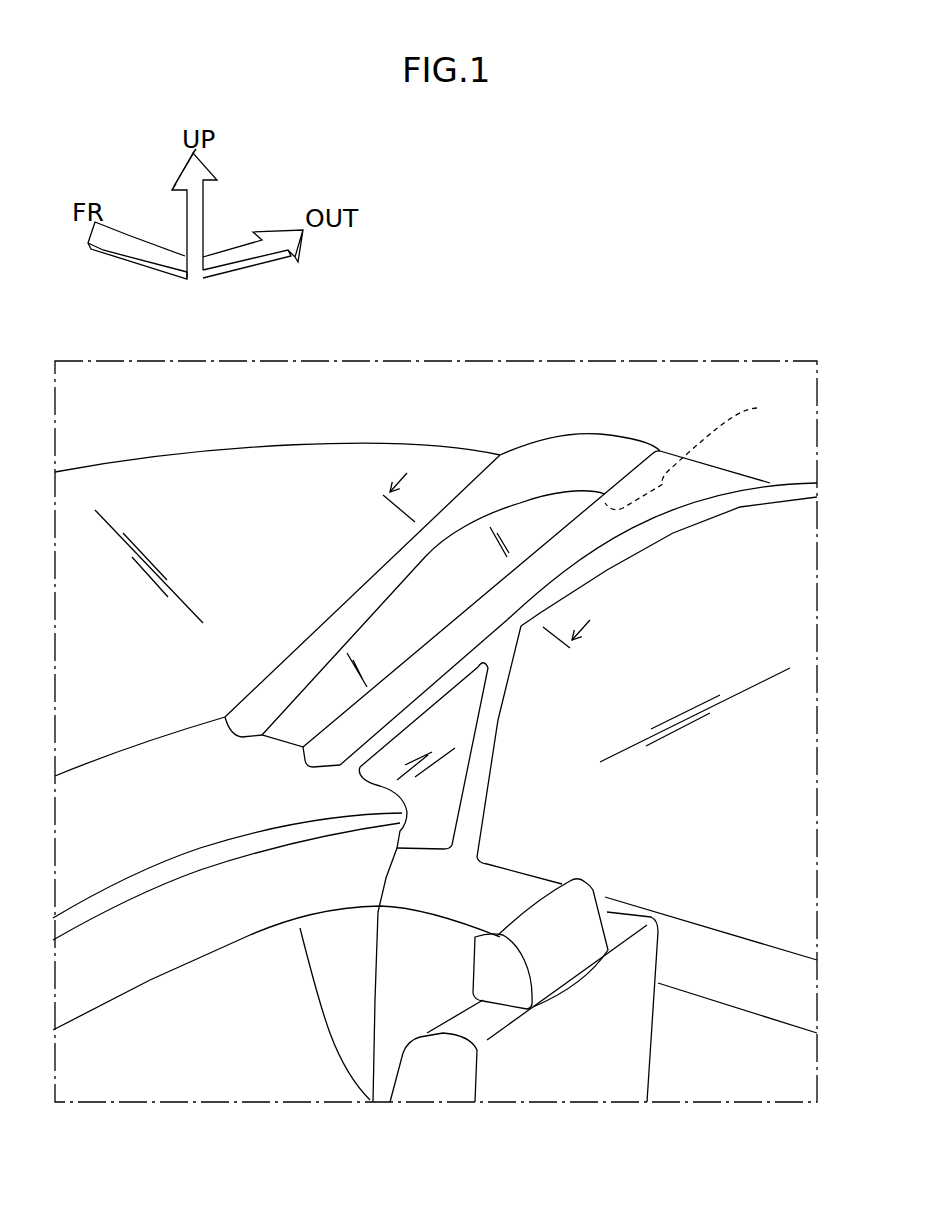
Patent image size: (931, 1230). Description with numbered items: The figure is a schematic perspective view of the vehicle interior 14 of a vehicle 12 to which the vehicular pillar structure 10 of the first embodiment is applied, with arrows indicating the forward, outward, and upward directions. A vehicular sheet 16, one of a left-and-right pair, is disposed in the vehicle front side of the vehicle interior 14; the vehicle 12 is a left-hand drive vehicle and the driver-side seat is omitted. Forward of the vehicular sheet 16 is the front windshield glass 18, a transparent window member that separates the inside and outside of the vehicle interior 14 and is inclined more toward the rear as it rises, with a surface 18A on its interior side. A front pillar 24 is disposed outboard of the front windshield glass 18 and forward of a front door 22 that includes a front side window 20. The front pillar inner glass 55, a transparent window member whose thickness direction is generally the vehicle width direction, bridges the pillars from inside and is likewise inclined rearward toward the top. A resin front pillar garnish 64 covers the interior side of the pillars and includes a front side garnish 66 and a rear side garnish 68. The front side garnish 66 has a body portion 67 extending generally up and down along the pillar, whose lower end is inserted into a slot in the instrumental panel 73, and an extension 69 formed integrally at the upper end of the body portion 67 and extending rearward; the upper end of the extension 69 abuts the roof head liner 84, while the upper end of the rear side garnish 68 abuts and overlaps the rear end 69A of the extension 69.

The vehicular pillar structure 10 is at (645, 596).
The vehicle 12 is at (572, 357).
The vehicle interior 14 is at (262, 1013).
The vehicular sheet 16 is at (616, 925).
The front windshield glass 18 is at (160, 655).
The surface of the front glass 18A is at (388, 536).
The front side window 20 is at (715, 760).
The front door 22 is at (746, 1021).
The front pillar 24 is at (442, 609).
The front pillar inner glass 55 is at (447, 596).
The front pillar garnish 64 is at (442, 609).
The front side garnish 66 is at (362, 611).
The body portion 67 is at (318, 645).
The rear side garnish 68 is at (505, 622).
The extension 69 is at (612, 448).
The rear end of the extension 69A is at (707, 455).
The instrumental panel 73 is at (175, 832).
The roof head liner 84 is at (672, 382).